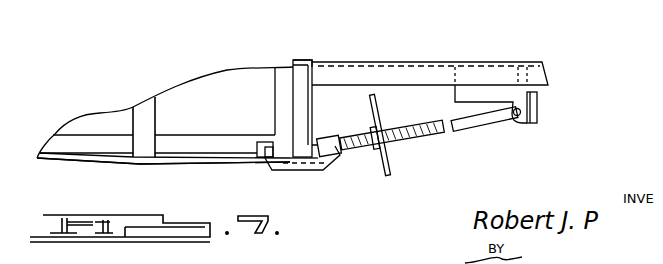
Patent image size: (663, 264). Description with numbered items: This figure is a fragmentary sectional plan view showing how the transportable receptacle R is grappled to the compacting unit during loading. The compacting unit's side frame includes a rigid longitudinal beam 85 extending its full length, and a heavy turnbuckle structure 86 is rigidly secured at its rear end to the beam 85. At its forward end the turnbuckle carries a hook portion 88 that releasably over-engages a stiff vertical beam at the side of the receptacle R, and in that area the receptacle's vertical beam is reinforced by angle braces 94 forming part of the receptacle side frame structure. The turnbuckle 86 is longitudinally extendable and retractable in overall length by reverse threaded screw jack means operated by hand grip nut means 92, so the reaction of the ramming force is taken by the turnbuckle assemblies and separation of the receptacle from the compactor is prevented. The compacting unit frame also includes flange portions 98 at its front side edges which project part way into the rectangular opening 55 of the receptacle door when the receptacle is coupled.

The receptacle R is at (170, 87).
The rectangular opening 55 is at (303, 64).
The longitudinal beam 85 is at (547, 82).
The turnbuckle structure 86 is at (478, 125).
The hook portion 88 is at (298, 168).
The hand grip nut means 92 is at (390, 160).
The angle braces 94 is at (173, 162).
The flange portions 98 is at (300, 60).